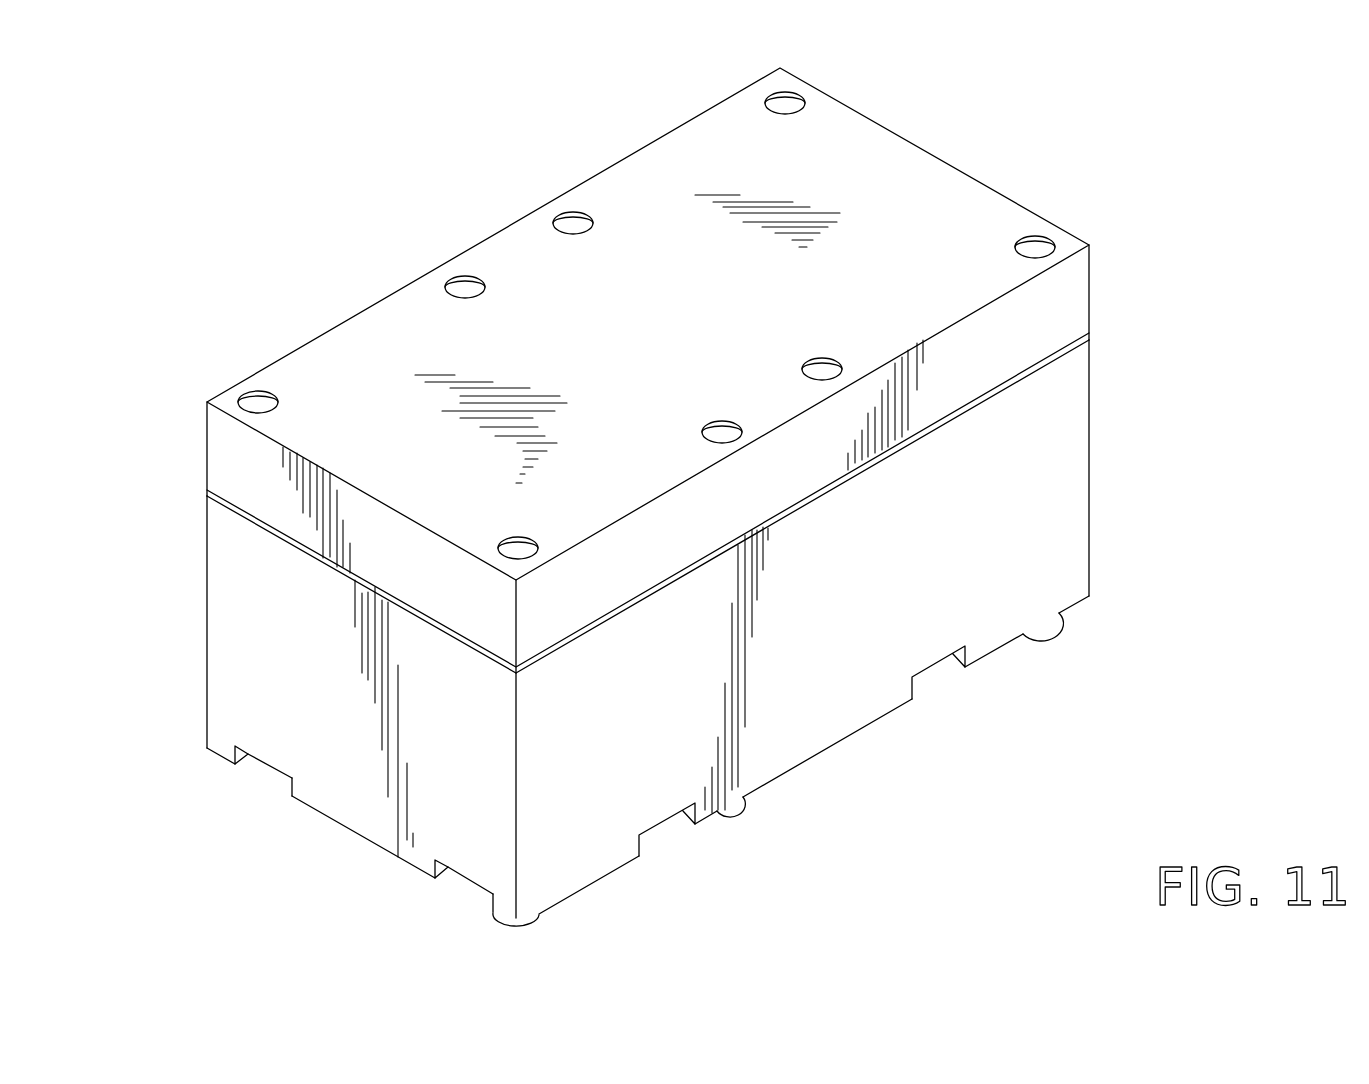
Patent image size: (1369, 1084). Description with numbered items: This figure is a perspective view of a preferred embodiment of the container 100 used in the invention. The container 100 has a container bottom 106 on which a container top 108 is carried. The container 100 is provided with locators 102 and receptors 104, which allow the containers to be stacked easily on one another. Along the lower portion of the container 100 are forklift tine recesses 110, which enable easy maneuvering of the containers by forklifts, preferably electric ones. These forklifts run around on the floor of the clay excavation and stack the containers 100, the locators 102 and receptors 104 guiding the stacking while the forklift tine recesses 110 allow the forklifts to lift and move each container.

The container 100 is at (674, 508).
The locators 102 is at (813, 755).
The receptors 104 is at (803, 371).
The container bottom 106 is at (920, 589).
The container top 108 is at (787, 494).
The forklift tine recesses 110 is at (271, 770).